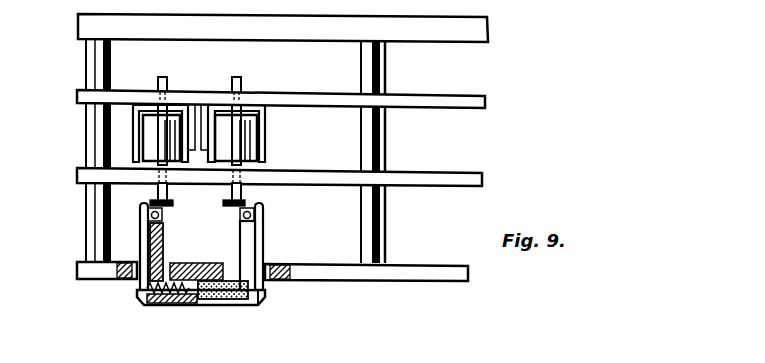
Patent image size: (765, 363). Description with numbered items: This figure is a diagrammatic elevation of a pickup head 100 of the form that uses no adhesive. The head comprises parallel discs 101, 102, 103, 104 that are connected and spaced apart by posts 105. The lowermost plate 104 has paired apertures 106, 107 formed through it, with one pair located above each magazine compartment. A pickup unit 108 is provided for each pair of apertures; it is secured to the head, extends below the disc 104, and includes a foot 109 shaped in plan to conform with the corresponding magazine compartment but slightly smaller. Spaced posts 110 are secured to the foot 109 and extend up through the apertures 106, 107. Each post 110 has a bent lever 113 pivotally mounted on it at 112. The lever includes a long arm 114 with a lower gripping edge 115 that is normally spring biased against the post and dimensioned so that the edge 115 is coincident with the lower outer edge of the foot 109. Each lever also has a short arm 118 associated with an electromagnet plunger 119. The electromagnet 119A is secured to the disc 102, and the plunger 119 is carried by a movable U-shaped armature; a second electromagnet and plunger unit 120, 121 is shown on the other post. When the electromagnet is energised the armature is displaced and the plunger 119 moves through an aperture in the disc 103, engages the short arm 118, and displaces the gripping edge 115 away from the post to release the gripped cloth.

The pickup head 100 is at (513, 160).
The disc 101 is at (474, 31).
The disc 102 is at (470, 108).
The disc 103 is at (453, 187).
The lowermost plate 104 is at (415, 274).
The post 105 is at (386, 70).
The aperture 106 is at (128, 283).
The aperture 107 is at (268, 296).
The pickup unit 108 is at (268, 238).
The foot 109 is at (220, 315).
The spaced post 110 is at (240, 240).
The pivot 112 is at (162, 213).
The bent lever 113 is at (130, 228).
The long arm 114 is at (139, 252).
The gripping edge 115 is at (141, 303).
The short arm 118 is at (152, 200).
The electromagnet plunger 119 is at (168, 78).
The electromagnet 119A is at (143, 135).
The second solenoid coil 120 is at (264, 129).
The aperture 121 is at (258, 163).